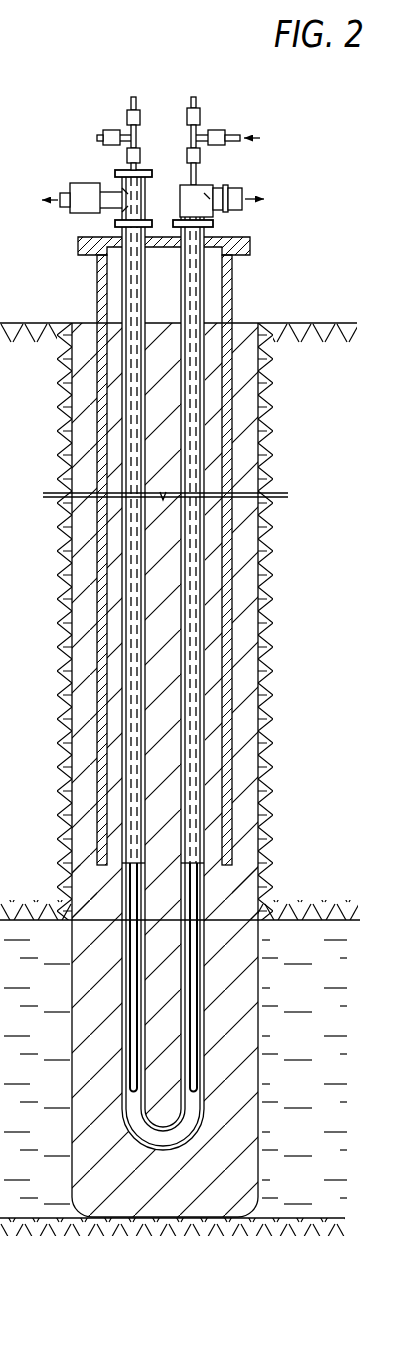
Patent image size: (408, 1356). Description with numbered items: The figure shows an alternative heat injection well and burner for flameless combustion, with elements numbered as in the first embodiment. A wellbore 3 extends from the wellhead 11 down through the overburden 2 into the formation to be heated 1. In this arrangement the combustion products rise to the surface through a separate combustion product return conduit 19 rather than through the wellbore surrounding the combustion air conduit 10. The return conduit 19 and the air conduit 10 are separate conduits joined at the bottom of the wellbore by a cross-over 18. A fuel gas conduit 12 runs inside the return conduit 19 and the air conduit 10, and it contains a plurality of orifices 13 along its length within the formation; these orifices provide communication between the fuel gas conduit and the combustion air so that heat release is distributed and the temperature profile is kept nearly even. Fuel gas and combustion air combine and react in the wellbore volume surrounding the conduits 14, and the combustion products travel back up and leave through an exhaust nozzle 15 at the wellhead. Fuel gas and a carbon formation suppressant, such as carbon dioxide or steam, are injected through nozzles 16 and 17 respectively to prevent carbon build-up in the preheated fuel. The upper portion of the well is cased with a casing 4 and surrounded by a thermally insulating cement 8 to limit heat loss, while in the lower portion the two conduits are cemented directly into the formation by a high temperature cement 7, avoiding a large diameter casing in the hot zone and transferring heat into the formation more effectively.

The formation to be heated 1 is at (34, 1096).
The overburden 2 is at (46, 653).
The wellbore 3 is at (166, 446).
The casing 4 is at (236, 466).
The high temperature cement 7 is at (88, 1029).
The thermally insulating cement 8 is at (88, 879).
The combustion air conduit 10 is at (131, 541).
The wellhead 11 is at (94, 277).
The fuel gas conduit 12 is at (200, 606).
The orifices 13 is at (138, 1046).
The wellbore volume surrounding the conduits 14 is at (203, 958).
The exhaust nozzle 15 is at (221, 182).
The fuel gas injection nozzle 16 is at (133, 97).
The carbon formation suppressant injection nozzle 17 is at (96, 136).
The cross-over 18 is at (168, 1153).
The combustion product return conduit 19 is at (212, 406).